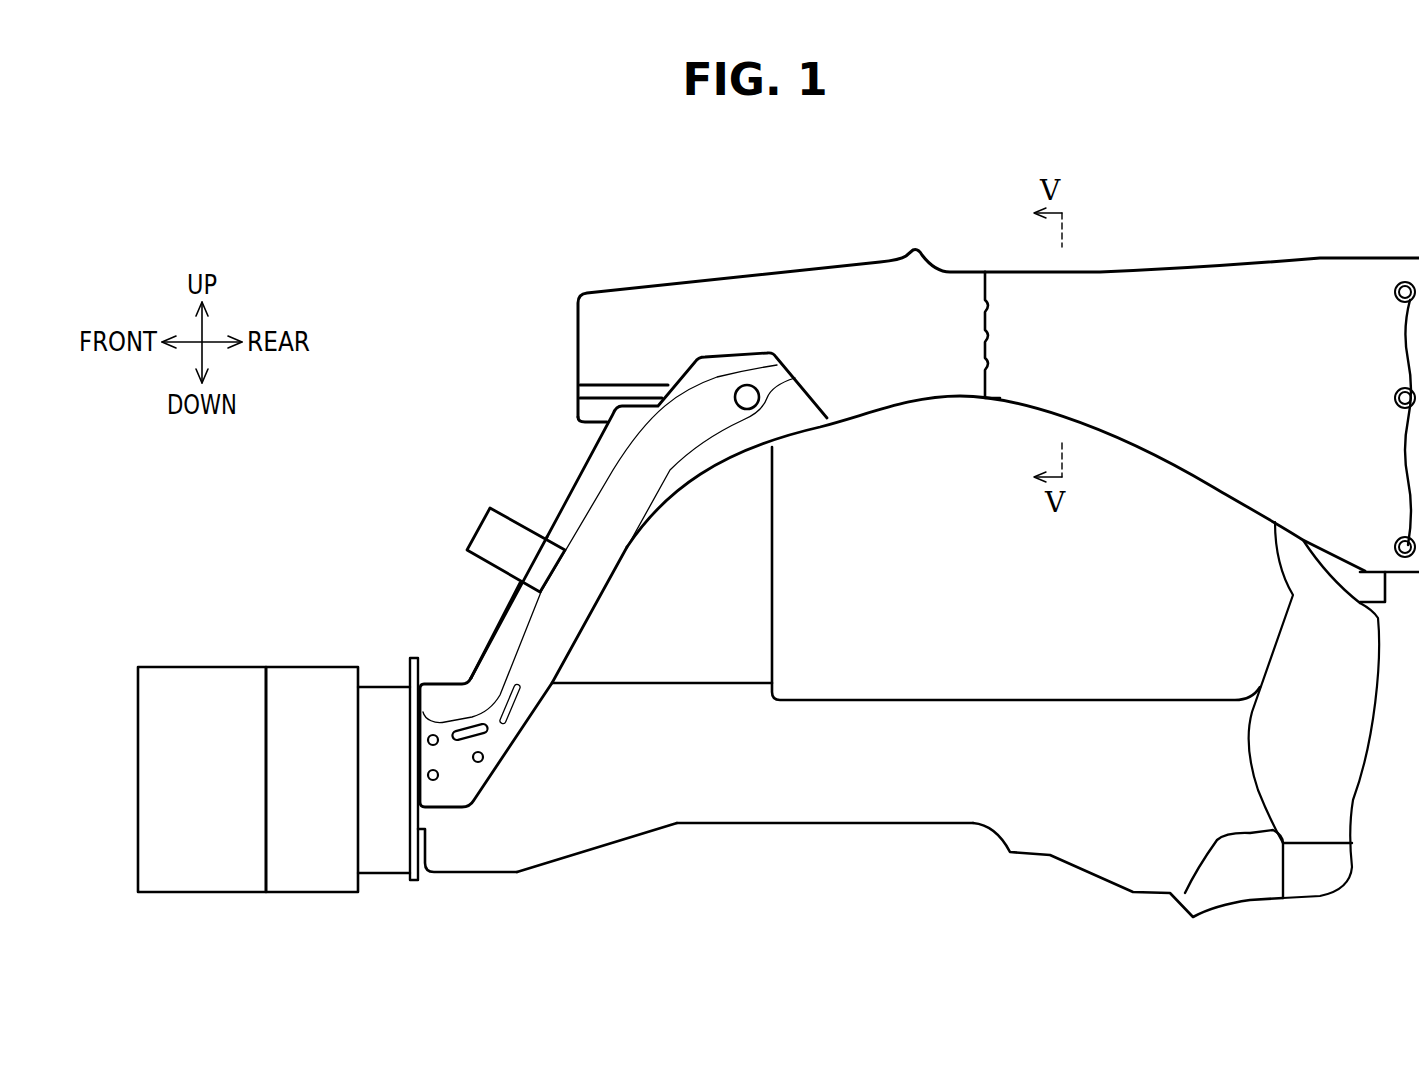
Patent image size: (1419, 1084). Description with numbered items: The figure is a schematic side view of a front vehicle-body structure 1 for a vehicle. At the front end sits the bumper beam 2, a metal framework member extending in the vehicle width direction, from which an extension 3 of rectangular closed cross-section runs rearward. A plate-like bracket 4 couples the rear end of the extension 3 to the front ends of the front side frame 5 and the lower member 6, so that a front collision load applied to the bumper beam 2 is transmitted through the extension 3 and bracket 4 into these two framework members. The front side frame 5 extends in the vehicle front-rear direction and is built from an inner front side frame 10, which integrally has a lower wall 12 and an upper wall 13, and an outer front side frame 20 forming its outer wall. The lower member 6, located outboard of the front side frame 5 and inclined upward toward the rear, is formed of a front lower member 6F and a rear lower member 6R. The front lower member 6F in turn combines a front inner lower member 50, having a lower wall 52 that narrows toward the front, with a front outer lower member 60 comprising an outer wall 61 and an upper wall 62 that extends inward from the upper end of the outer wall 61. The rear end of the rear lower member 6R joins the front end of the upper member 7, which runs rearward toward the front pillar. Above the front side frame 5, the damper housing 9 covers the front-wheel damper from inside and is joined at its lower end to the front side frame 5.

The front vehicle-body structure 1 is at (521, 261).
The bumper beam 2 is at (200, 688).
The extension 3 is at (310, 688).
The bracket 4 is at (412, 662).
The front side frame 5 is at (833, 812).
The lower member 6 is at (725, 440).
The rear lower member 6R is at (777, 293).
The front lower member 6F is at (606, 447).
The upper member 7 is at (1198, 295).
The damper housing 9 is at (795, 535).
The inner front side frame 10 is at (480, 855).
The lower wall 12 is at (578, 855).
The upper wall 13 is at (695, 683).
The outer front side frame 20 is at (683, 812).
The front inner lower member 50 is at (632, 548).
The lower wall 52 is at (588, 622).
The front outer lower member 60 is at (490, 630).
The outer wall 61 is at (568, 520).
The upper wall 62 is at (578, 473).